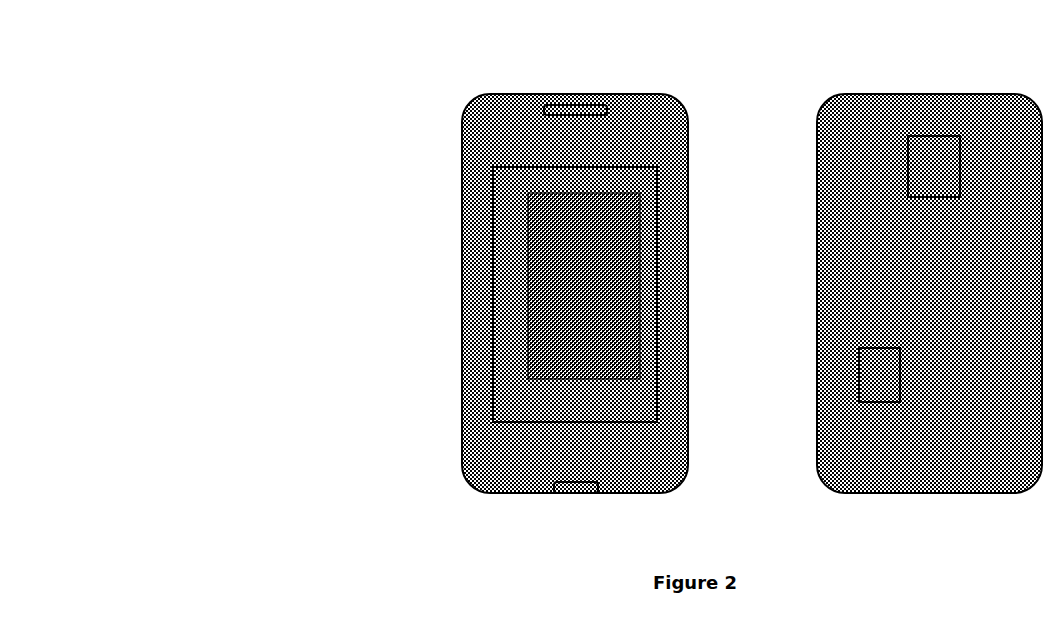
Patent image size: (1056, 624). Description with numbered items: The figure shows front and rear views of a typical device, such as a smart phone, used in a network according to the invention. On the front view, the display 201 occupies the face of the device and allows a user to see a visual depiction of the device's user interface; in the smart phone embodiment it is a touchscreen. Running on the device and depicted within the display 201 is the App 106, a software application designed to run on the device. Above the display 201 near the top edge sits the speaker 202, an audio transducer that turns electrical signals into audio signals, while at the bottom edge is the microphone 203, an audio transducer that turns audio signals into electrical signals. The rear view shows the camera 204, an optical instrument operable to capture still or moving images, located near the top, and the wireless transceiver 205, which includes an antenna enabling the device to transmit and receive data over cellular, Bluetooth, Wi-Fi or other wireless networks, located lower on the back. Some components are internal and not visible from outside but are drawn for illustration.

The App 106 is at (562, 267).
The display 201 is at (493, 293).
The speaker 202 is at (573, 104).
The microphone 203 is at (575, 493).
The camera 204 is at (935, 135).
The wireless transceiver 205 is at (878, 402).